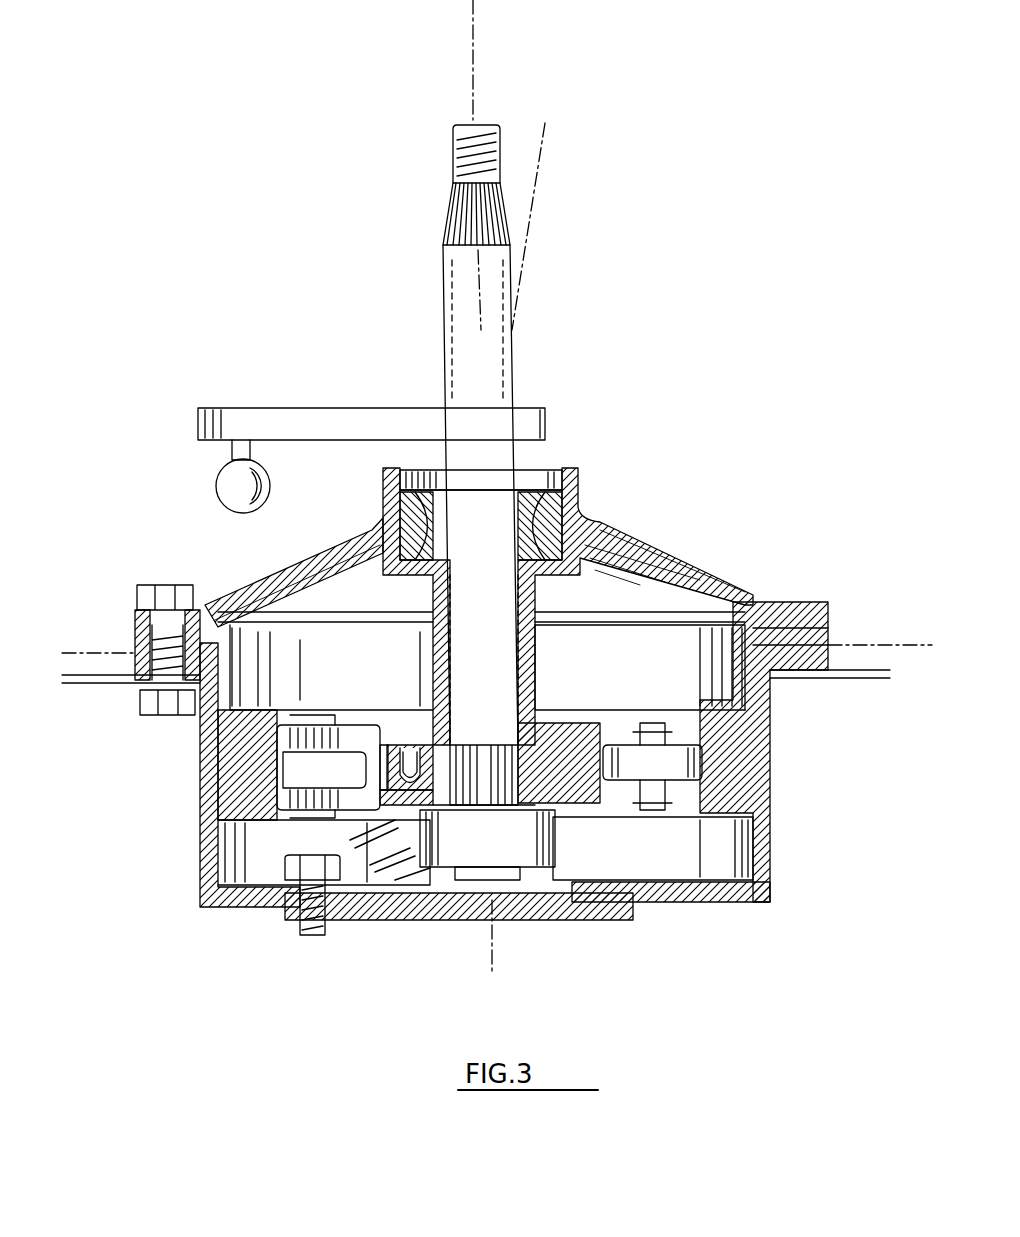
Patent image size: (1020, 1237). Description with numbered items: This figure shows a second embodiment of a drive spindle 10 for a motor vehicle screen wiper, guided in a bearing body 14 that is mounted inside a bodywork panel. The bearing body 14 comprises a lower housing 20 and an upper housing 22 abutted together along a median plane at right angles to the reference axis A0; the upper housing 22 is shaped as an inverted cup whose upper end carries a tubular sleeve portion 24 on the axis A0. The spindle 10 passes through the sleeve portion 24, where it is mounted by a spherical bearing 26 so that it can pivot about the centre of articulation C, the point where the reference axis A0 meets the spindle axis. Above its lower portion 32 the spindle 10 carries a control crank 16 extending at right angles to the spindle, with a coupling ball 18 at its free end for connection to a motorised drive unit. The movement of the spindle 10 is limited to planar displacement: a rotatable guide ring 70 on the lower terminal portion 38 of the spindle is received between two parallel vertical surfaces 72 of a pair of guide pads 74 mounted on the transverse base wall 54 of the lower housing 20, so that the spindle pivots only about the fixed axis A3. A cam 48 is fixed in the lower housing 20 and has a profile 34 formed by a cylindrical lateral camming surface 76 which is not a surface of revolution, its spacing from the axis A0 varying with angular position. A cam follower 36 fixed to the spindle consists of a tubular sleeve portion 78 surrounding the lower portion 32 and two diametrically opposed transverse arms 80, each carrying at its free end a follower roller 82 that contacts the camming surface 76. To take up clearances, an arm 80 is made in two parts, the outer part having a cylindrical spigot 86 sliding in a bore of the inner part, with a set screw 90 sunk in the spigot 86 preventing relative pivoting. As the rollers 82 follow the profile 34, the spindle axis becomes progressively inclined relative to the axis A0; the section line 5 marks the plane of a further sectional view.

The reference axis A0 is at (472, 24).
The fixed axis A3 is at (481, 535).
The centre of articulation C is at (485, 580).
The section line 5- 5 is at (78, 648).
The drive spindle 10 is at (429, 318).
The bearing body 14 is at (733, 560).
The control crank 16 is at (280, 420).
The coupling ball 18 is at (228, 484).
The lower housing 20 is at (717, 908).
The upper housing 22 is at (645, 550).
The tubular sleeve portion 24 is at (570, 506).
The spherical bearing 26 is at (548, 462).
The lower portion of the spindle 32 is at (473, 651).
The cam profile 34 is at (697, 800).
The cam follower 36 is at (590, 716).
The lower terminal portion of the spindle 38 is at (475, 884).
The cam 48 is at (735, 755).
The transverse base wall 54 is at (690, 890).
The guide ring 70 is at (510, 852).
The vertical surfaces 72 is at (400, 870).
The guide pads 74 is at (355, 850).
The lateral camming surface 76 is at (690, 720).
The tubular sleeve portion 78 is at (537, 670).
The transverse arms 80 is at (578, 870).
The follower roller 82 is at (312, 765).
The cylindrical spigot 86 is at (385, 755).
The set screw 90 is at (418, 758).